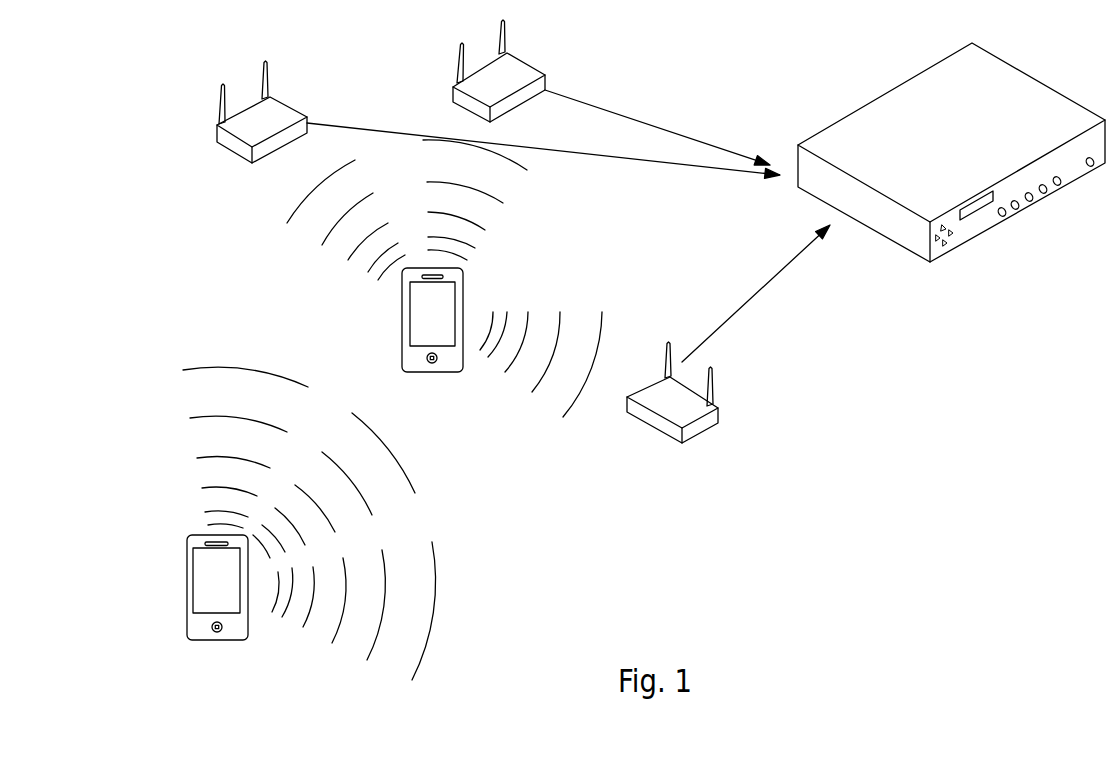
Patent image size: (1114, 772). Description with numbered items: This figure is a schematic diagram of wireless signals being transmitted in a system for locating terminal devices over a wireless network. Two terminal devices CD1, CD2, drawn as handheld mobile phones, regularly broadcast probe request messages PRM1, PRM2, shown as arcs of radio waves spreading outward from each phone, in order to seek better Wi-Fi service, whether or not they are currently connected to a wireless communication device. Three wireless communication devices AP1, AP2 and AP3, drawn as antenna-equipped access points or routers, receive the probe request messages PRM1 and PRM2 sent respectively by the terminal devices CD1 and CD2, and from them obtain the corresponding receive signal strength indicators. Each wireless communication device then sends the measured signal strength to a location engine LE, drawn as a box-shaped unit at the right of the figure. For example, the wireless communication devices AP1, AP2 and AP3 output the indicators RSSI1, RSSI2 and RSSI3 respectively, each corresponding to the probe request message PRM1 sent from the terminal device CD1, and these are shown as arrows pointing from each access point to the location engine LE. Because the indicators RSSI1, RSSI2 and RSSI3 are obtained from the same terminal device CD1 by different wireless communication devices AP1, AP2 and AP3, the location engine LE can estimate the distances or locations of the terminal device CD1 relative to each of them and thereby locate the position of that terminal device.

The wireless communication device AP1 is at (499, 67).
The wireless communication device AP2 is at (259, 109).
The wireless communication device AP3 is at (670, 392).
The receive signal strength indicator RSSI1 is at (657, 127).
The receive signal strength indicator RSSI2 is at (543, 149).
The receive signal strength indicator RSSI3 is at (756, 293).
The probe request message PRM1 is at (444, 278).
The probe request message PRM2 is at (314, 523).
The terminal device CD1 is at (432, 335).
The terminal device CD2 is at (217, 603).
The location engine LE is at (951, 152).